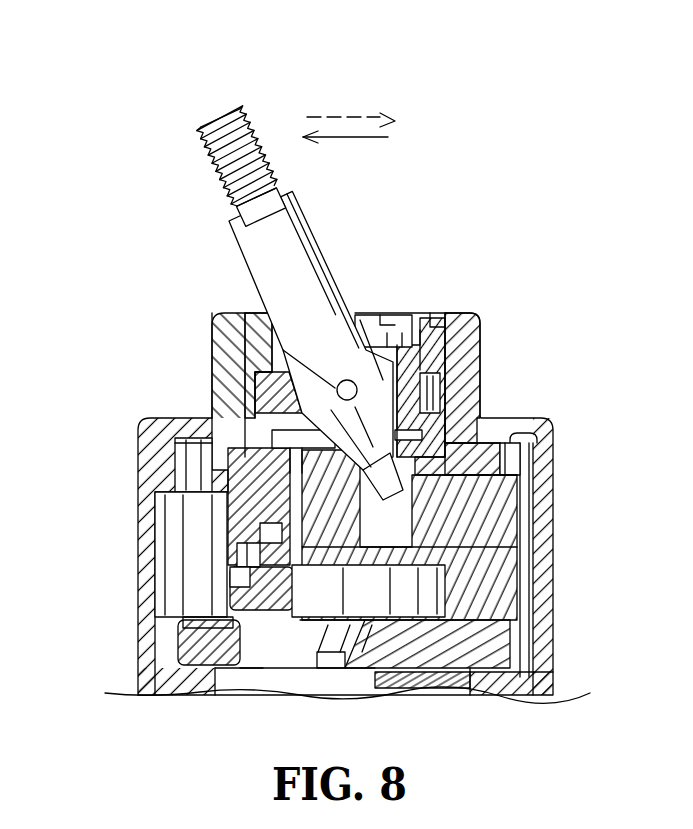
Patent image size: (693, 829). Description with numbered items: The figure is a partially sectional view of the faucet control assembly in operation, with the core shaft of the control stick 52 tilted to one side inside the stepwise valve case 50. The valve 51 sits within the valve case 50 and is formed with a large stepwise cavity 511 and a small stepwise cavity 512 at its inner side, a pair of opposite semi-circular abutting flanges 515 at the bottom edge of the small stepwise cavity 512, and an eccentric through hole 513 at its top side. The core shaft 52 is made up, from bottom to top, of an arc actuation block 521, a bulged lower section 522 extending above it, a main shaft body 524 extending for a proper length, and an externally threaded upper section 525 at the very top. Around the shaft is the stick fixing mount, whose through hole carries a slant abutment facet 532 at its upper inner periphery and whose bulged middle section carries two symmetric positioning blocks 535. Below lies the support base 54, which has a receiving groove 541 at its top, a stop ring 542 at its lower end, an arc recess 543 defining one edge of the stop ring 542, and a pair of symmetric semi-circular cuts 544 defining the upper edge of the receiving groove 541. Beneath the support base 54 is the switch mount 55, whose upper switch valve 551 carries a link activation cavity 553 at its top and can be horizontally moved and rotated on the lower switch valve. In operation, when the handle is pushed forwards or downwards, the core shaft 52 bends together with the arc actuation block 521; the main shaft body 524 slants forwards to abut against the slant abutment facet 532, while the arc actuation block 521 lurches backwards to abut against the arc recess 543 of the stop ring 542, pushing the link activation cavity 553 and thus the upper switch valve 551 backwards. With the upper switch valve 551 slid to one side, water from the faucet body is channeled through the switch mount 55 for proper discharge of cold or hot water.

The valve case 50 is at (578, 492).
The valve 51 is at (235, 345).
The core shaft of the control stick 52 is at (261, 303).
The support base 54 is at (216, 490).
The switch mount 55 is at (524, 597).
The large stepwise cavity 511 is at (252, 455).
The small stepwise cavity 512 is at (432, 313).
The eccentric through hole 513 is at (395, 315).
The semi-circular abutting flanges 515 is at (462, 345).
The arc actuation block 521 is at (410, 462).
The bulged lower section 522 is at (363, 325).
The main shaft body 524 is at (308, 240).
The externally threaded upper section 525 is at (212, 157).
The slant abutment facet 532 is at (243, 422).
The positioning blocks 535 is at (458, 388).
The receiving groove 541 is at (456, 425).
The stop ring 542 is at (315, 456).
The arc recess 543 is at (545, 443).
The semi-circular cuts 544 is at (460, 408).
The upper switch valve 551 is at (500, 587).
The link activation cavity 553 is at (397, 515).